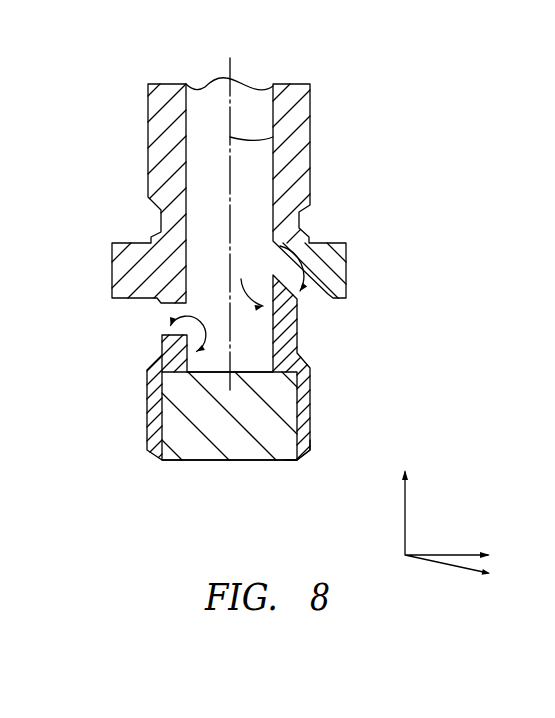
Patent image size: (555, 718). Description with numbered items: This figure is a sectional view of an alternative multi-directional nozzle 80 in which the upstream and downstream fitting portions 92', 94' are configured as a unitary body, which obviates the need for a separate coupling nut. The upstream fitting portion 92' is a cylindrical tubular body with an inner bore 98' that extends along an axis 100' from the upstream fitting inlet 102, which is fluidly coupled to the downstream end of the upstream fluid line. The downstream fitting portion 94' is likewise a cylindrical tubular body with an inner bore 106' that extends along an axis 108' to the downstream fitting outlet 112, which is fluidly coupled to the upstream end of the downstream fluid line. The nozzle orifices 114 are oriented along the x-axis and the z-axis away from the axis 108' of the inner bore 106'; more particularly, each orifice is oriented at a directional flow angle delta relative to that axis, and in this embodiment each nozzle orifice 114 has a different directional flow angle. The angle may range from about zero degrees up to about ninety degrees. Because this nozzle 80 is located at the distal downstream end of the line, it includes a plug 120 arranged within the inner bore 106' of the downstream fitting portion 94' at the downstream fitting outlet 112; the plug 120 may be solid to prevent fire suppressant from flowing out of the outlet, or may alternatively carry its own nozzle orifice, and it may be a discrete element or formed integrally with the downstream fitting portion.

The multi-directional nozzle 80 is at (88, 87).
The upstream fitting inlet 102 is at (259, 86).
The upstream fitting portion 92' is at (128, 193).
The inner bore 98' is at (347, 191).
The inner bore 106' is at (347, 191).
The axis 100' is at (342, 121).
The axis 108' is at (342, 121).
The downstream fitting portion 94' is at (273, 367).
The plug 120 is at (202, 450).
The downstream fitting outlet 112 is at (297, 460).
The nozzle orifices 114 is at (187, 317).